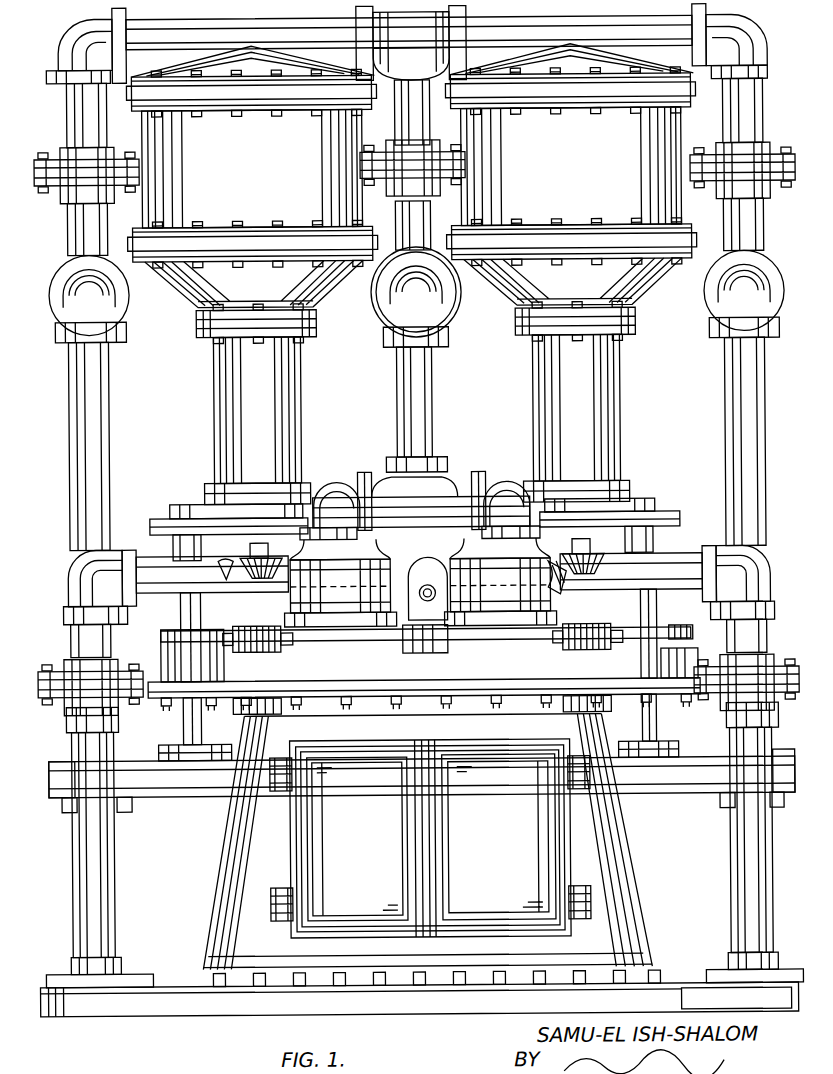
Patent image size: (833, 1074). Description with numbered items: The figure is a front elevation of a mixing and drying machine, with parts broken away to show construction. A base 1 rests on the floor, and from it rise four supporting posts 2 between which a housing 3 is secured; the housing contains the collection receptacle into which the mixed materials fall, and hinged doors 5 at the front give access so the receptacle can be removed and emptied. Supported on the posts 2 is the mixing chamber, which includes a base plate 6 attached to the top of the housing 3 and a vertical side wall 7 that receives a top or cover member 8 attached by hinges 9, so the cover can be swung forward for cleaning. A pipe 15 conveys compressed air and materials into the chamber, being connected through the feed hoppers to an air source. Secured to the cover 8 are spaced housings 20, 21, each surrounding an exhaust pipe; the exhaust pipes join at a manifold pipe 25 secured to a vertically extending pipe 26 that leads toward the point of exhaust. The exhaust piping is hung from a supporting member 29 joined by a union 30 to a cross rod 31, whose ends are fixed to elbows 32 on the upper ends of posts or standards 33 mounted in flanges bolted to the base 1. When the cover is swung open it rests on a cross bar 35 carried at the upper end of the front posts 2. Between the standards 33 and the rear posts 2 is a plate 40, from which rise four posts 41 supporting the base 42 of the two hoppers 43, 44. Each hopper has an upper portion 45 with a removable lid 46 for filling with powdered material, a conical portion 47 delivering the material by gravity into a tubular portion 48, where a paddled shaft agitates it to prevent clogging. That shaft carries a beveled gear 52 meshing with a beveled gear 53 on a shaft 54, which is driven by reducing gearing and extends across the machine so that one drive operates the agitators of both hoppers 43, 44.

The base 1 is at (162, 1000).
The supporting posts 2 is at (105, 848).
The housing 3 is at (257, 852).
The hinged doors 5 is at (431, 839).
The base plate 6 is at (680, 680).
The vertical side wall 7 is at (177, 663).
The cover member 8 is at (667, 630).
The hinges 9 is at (262, 628).
The pipe 15 is at (306, 484).
The housing 20 is at (522, 600).
The housing 21 is at (328, 603).
The manifold pipe 25 is at (443, 492).
The vertically extending pipe 26 is at (432, 384).
The supporting member 29 is at (422, 228).
The union 30 is at (411, 43).
The cross rod 31 is at (218, 35).
The elbows 32 is at (60, 52).
The posts or standards 33 is at (70, 113).
The cross bar 35 is at (163, 583).
The plate 40 is at (185, 790).
The posts 41 is at (182, 720).
The base 42 is at (158, 518).
The hopper 43 is at (654, 282).
The hopper 44 is at (318, 280).
The upper portion 45 is at (411, 167).
The removable lid 46 is at (268, 62).
The conical portion 47 is at (186, 292).
The tubular portion 48 is at (214, 370).
The beveled gear 52 is at (250, 573).
The beveled gear 53 is at (560, 595).
The shaft 54 is at (650, 520).